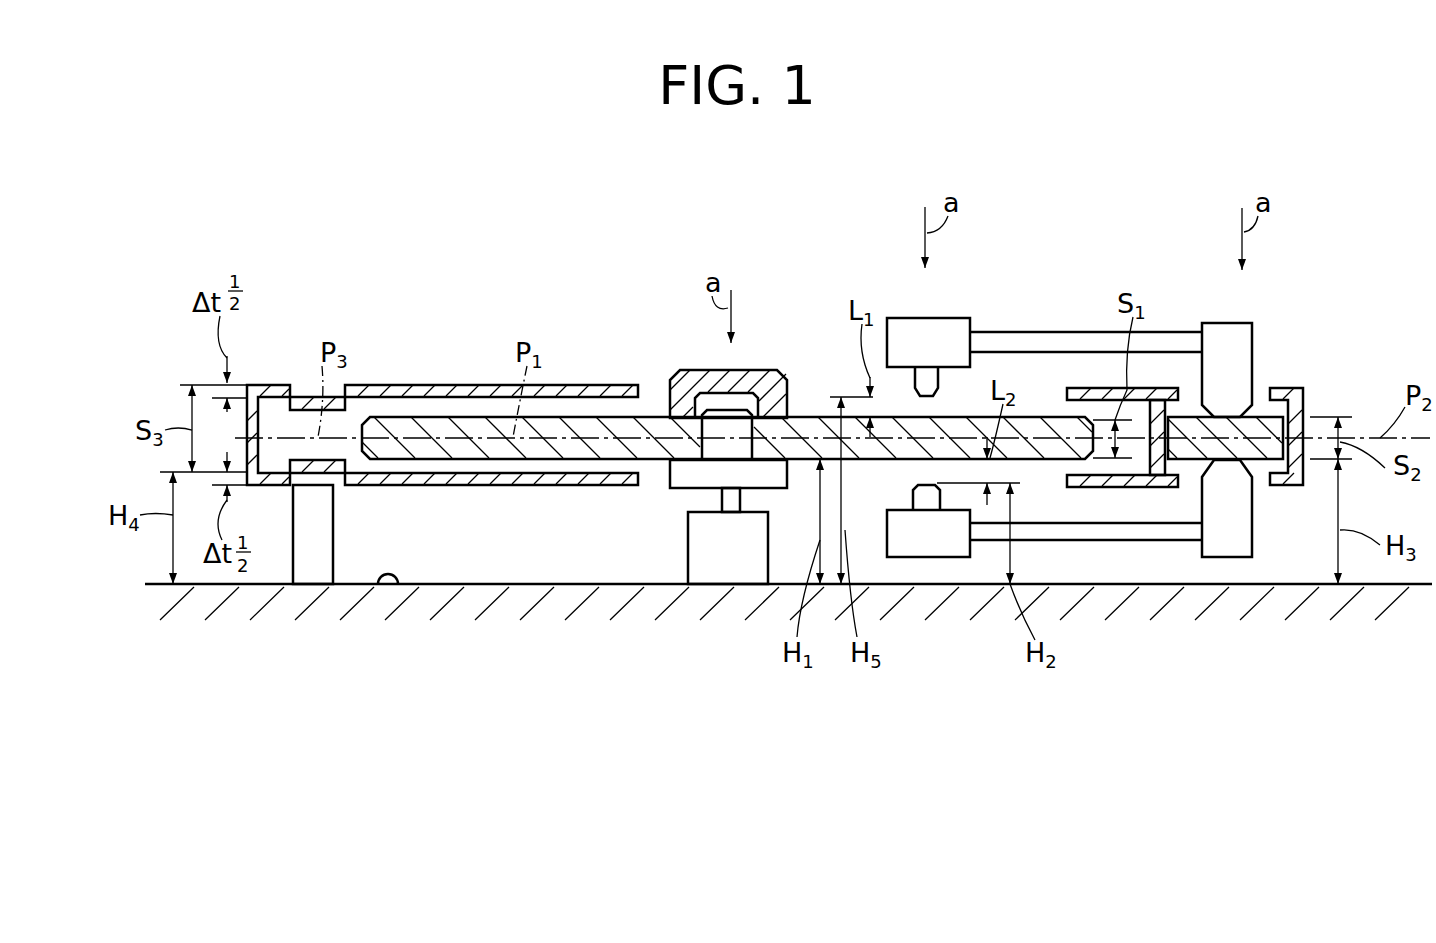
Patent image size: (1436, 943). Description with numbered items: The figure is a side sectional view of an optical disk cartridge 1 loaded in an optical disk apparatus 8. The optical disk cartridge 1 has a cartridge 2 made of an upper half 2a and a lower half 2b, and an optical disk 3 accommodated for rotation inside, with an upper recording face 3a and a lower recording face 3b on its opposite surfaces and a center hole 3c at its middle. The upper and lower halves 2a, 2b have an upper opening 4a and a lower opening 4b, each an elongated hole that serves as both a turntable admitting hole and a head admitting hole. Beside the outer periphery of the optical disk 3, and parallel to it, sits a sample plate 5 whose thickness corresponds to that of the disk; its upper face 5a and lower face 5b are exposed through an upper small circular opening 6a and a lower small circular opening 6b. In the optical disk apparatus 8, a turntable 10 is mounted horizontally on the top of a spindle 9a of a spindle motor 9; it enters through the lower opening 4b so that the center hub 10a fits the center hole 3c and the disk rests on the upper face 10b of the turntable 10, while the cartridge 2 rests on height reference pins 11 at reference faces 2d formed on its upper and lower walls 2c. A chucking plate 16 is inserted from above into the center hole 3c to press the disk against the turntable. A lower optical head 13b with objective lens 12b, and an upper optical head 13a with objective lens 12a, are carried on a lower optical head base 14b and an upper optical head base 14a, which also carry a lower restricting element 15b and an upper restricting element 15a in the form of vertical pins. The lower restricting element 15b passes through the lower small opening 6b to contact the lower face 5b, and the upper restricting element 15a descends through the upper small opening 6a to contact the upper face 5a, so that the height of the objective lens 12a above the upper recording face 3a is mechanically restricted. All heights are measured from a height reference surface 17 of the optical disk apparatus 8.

The optical disk cartridge 1 is at (440, 362).
The cartridge 2 is at (408, 385).
The upper half 2a is at (478, 385).
The lower half 2b is at (540, 485).
The upper and lower walls 2c is at (382, 385).
The reference faces 2d is at (300, 397).
The optical disk 3 is at (585, 420).
The upper recording face 3a is at (1025, 417).
The lower recording face 3b is at (1033, 460).
The center hole 3c is at (752, 372).
The upper opening 4a is at (1058, 390).
The lower opening 4b is at (1075, 487).
The sample plate 5 is at (1277, 390).
The upper face of sample plate 5a is at (1262, 417).
The lower face of sample plate 5b is at (1240, 459).
The upper small circular opening 6a is at (1187, 390).
The lower small circular opening 6b is at (1165, 480).
The optical disk apparatus 8 is at (620, 675).
The spindle motor 9 is at (732, 565).
The spindle 9a is at (722, 500).
The turntable 10 is at (783, 470).
The center hub 10a is at (725, 430).
The upper face of turntable 10b is at (787, 465).
The height reference pins 11 is at (320, 568).
The objective lens of upper optical head 12a is at (937, 382).
The objective lens of lower optical head 12b is at (940, 500).
The upper optical head 13a is at (902, 330).
The lower optical head 13b is at (930, 545).
The upper optical head base 14a is at (1152, 340).
The lower optical head base 14b is at (1148, 540).
The upper restricting element 15a is at (1230, 340).
The lower restricting element 15b is at (1230, 545).
The chucking plate 16 is at (693, 372).
The height reference surface 17 is at (397, 590).